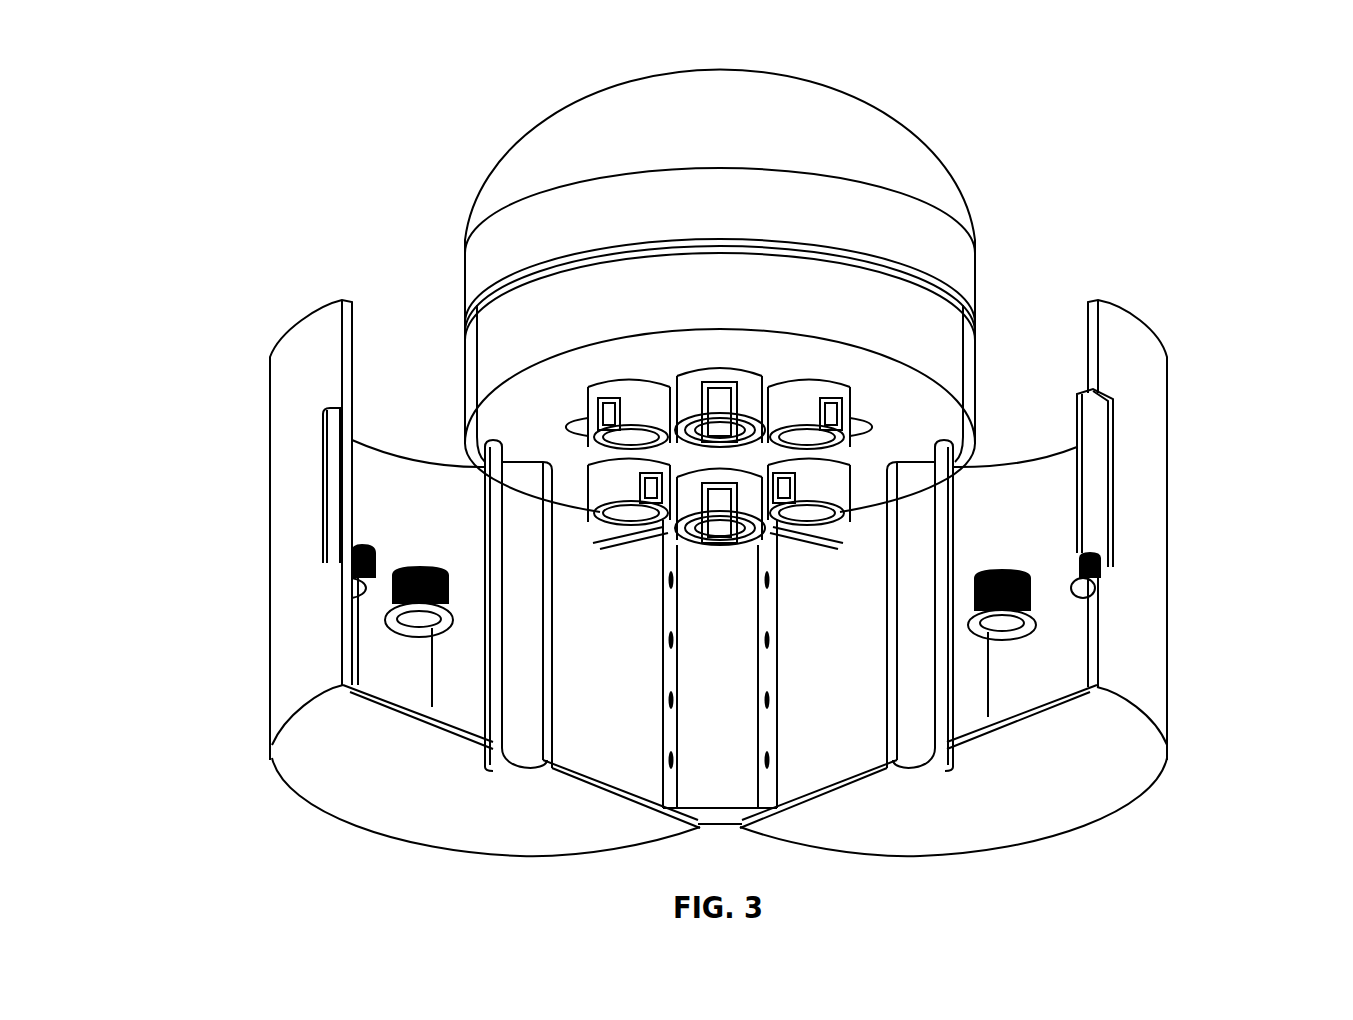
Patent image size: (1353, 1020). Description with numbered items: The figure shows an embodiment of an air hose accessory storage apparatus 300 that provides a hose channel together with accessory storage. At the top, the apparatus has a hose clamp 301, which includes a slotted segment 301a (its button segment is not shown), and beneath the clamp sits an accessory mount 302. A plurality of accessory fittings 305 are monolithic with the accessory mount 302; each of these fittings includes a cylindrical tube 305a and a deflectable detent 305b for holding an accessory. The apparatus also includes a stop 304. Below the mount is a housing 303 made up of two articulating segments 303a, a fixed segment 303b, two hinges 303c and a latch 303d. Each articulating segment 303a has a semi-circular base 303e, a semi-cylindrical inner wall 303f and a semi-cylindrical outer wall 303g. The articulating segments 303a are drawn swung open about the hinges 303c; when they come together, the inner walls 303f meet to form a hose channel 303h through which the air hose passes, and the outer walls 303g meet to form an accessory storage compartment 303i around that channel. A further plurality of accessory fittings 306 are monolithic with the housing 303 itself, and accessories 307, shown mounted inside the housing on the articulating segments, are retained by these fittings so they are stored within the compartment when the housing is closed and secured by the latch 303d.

The air hose accessory storage apparatus 300 is at (194, 108).
The hose clamp 301 is at (463, 275).
The slotted segment 301a is at (745, 220).
The accessory mount 302 is at (740, 294).
The housing 303 is at (209, 342).
The articulating segments 303a is at (270, 580).
The fixed segment 303b is at (747, 694).
The hinges 303c is at (663, 602).
The latch 303d is at (322, 565).
The semi-circular base 303e is at (405, 771).
The semi-cylindrical inner wall 303f is at (483, 472).
The semi-cylindrical outer wall 303g is at (338, 379).
The hose channel 303h is at (522, 752).
The accessory storage compartment 303i is at (627, 752).
The stop 304 is at (752, 145).
The accessory fittings 305 is at (545, 443).
The cylindrical tubes 305a is at (640, 378).
The deflectable detents 305b is at (722, 545).
The accessory fittings 306 is at (1045, 612).
The accessories 307 is at (430, 568).